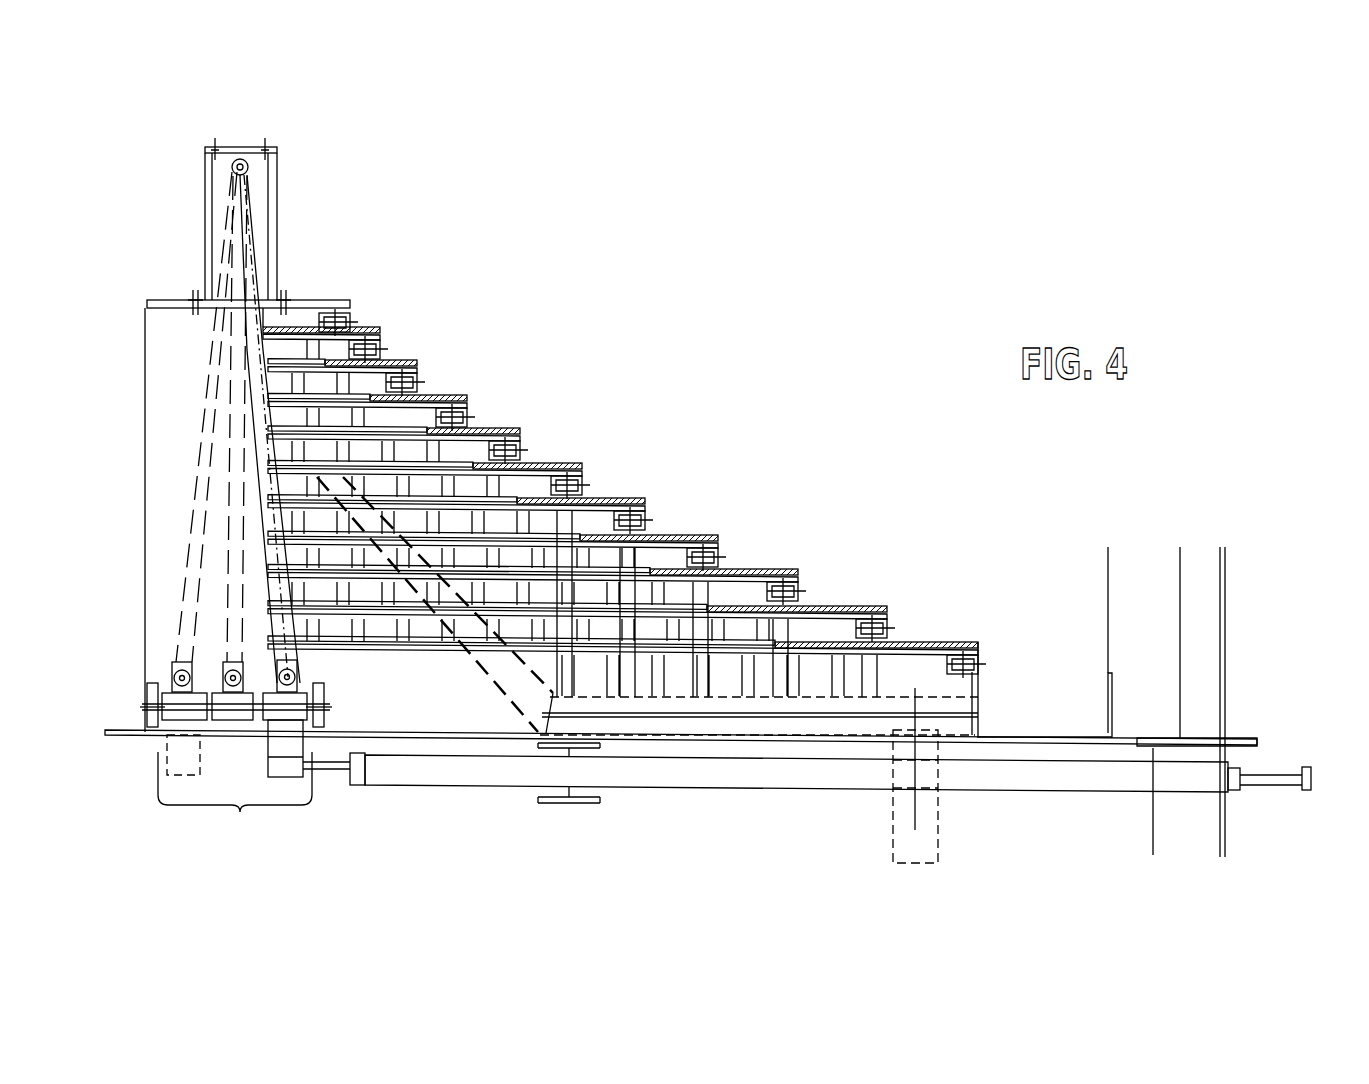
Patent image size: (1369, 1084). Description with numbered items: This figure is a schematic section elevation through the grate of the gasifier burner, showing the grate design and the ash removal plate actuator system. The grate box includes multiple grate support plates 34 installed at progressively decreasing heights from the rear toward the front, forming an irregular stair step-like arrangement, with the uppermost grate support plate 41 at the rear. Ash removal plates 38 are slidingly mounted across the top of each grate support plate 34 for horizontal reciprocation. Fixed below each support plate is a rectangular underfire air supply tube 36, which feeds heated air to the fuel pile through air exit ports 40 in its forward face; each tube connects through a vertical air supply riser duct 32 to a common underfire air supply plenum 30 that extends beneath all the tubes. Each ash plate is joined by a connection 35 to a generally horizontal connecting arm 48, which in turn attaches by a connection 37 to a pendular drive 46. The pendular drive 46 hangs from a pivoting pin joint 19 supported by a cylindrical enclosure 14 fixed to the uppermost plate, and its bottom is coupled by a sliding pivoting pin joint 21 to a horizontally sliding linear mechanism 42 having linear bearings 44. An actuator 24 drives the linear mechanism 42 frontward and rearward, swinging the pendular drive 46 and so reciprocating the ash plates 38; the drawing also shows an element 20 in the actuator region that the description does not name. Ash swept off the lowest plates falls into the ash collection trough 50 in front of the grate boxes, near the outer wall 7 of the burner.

The outer wall 7 is at (1225, 607).
The cylindrical enclosure 14 is at (277, 188).
The pivoting pin joint 19 is at (241, 162).
The hydraulic cylinder 20 is at (687, 790).
The sliding pivoting pin joint 21 is at (275, 676).
The actuator 24 is at (1307, 792).
The underfire air supply plenum 30 is at (820, 728).
The air supply riser duct 32 is at (713, 667).
The grate support plate 34 is at (743, 578).
The connection 35 is at (670, 567).
The underfire air supply tube 36 is at (520, 443).
The connection 37 is at (260, 503).
The ash removal plate 38 is at (407, 397).
The air exit port 40 is at (357, 332).
The uppermost grate support plate 41 is at (303, 300).
The linear mechanism 42 is at (236, 758).
The linear bearing 44 is at (300, 713).
The pendular drive 46 is at (243, 278).
The connecting arm 48 is at (322, 573).
The ash collection trough 50 is at (1030, 733).